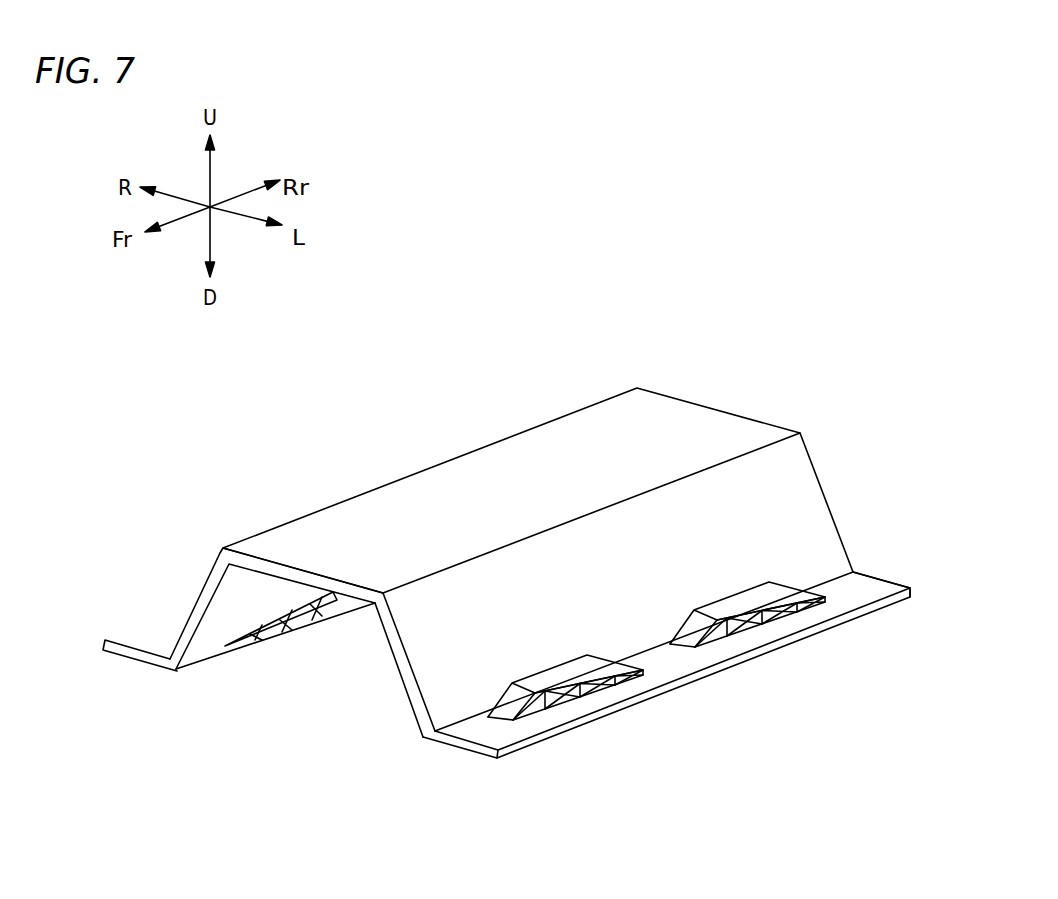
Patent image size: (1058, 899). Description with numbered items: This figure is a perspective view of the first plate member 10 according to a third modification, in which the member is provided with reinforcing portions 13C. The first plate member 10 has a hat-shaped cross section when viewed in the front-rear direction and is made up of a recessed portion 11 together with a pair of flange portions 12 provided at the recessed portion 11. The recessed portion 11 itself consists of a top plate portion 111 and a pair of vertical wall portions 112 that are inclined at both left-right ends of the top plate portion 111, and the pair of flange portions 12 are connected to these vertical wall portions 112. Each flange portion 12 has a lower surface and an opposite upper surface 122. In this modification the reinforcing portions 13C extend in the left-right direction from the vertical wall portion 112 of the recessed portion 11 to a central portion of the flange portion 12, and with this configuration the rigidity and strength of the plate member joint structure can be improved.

The first plate member 10 is at (743, 370).
The recessed portion 11 is at (437, 492).
The top plate portion 111 is at (267, 570).
The vertical wall portion 112 is at (407, 675).
The flange portion 12 is at (148, 647).
The upper surface 122 is at (865, 587).
The reinforcing portion 13C is at (753, 603).